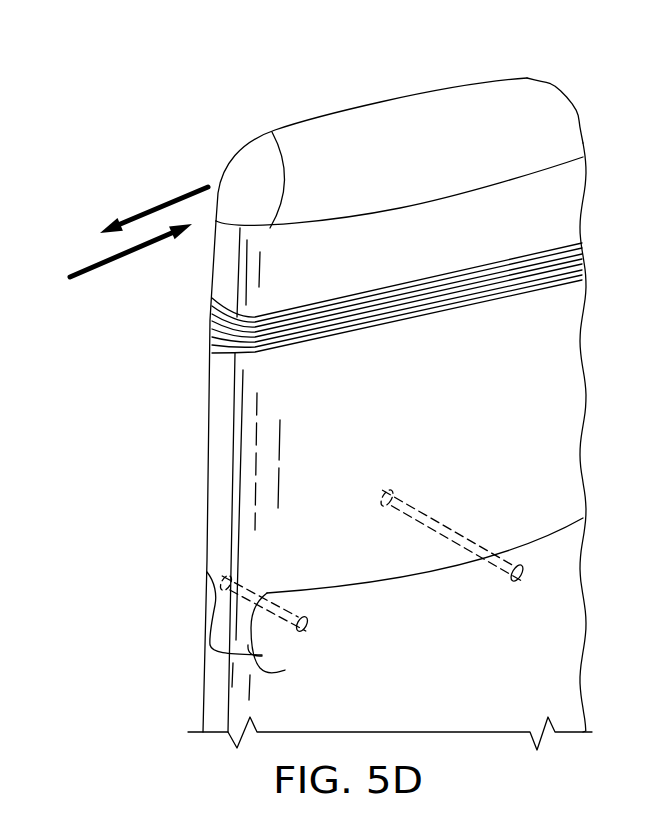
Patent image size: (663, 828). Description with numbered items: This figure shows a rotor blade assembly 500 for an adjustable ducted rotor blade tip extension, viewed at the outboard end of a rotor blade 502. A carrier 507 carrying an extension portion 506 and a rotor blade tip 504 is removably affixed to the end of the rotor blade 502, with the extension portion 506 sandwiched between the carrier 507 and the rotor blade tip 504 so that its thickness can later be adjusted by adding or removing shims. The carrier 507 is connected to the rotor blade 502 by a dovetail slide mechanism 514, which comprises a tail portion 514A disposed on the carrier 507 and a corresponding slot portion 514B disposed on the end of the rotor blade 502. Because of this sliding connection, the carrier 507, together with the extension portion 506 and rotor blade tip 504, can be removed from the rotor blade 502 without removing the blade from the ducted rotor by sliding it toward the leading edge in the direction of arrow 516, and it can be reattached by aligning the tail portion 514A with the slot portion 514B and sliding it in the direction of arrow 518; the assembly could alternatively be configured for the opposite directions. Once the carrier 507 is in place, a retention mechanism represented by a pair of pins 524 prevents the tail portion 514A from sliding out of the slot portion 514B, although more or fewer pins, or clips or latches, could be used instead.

The rotor blade assembly 500 is at (232, 60).
The rotor blade 502 is at (203, 705).
The rotor blade tip 504 is at (213, 273).
The extension portion 506 is at (210, 320).
The carrier 507 is at (208, 457).
The dovetail slide mechanism 514 is at (173, 589).
The tail portion 514A is at (210, 638).
The slot portion 514B is at (285, 670).
The arrow 516 is at (163, 205).
The arrow 518 is at (85, 268).
The pins 524 is at (311, 624).